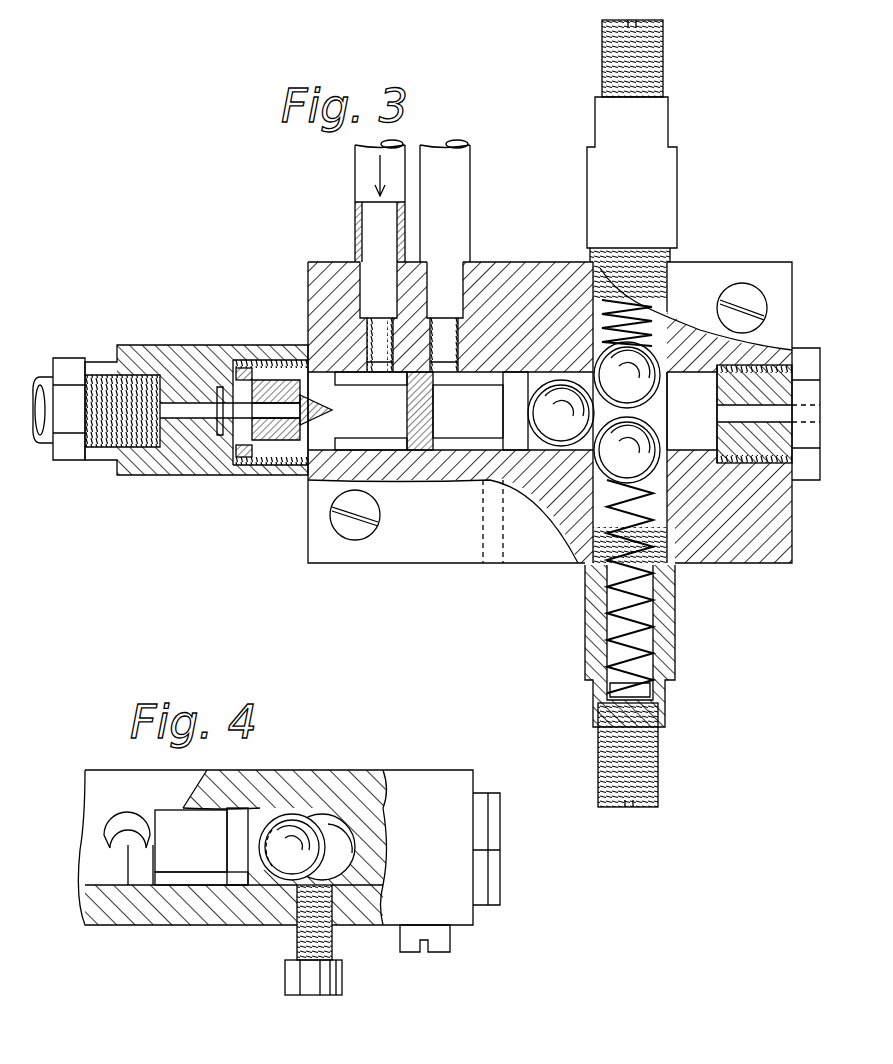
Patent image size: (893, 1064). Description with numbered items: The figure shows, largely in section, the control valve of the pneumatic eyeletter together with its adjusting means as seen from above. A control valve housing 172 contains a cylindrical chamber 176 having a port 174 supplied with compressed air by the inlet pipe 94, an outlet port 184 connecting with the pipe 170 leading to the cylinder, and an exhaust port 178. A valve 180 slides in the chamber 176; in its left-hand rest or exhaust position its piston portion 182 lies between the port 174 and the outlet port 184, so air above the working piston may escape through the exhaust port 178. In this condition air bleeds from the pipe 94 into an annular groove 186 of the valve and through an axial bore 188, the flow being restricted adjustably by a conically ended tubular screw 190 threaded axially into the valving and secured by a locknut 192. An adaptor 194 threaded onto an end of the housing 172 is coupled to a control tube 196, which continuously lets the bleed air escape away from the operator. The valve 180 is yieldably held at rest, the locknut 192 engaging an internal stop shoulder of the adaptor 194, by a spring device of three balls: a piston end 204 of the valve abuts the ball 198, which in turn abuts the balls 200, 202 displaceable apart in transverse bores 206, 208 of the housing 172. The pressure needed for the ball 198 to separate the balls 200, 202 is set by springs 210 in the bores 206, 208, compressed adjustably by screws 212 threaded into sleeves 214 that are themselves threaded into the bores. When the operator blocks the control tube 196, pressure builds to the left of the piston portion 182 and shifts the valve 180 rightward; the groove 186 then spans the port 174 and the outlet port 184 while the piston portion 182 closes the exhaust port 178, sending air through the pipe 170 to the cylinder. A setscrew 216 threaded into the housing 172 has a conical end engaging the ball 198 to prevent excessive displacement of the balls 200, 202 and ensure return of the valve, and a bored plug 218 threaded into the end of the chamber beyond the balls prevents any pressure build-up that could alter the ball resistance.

In FIG. 3, the inlet pipe 94 is at (356, 171).
In FIG. 3, the pipe 170 is at (468, 164).
In FIG. 4, the pipe 170 is at (126, 822).
In FIG. 3, the control valve housing 172 is at (308, 540).
In FIG. 4, the control valve housing 172 is at (178, 925).
In FIG. 3, the port 174 is at (378, 360).
In FIG. 3, the cylindrical chamber 176 is at (505, 383).
In FIG. 3, the exhaust port 178 is at (490, 480).
In FIG. 3, the valve 180 is at (432, 452).
In FIG. 4, the valve 180 is at (215, 861).
In FIG. 3, the piston portion 182 is at (440, 420).
In FIG. 4, the piston portion 182 is at (165, 845).
In FIG. 3, the outlet port 184 is at (443, 360).
In FIG. 3, the annular groove 186 is at (360, 440).
In FIG. 3, the axial bore 188 is at (300, 440).
In FIG. 3, the tubular screw 190 is at (262, 387).
In FIG. 3, the locknut 192 is at (244, 368).
In FIG. 3, the adaptor 194 is at (185, 470).
In FIG. 3, the control tube 196 is at (45, 445).
In FIG. 3, the ball 198 is at (560, 415).
In FIG. 4, the ball 198 is at (325, 838).
In FIG. 3, the ball 200 is at (630, 459).
In FIG. 4, the ball 200 is at (350, 868).
In FIG. 3, the ball 202 is at (630, 376).
In FIG. 3, the piston end 204 is at (515, 452).
In FIG. 4, the piston end 204 is at (255, 810).
In FIG. 3, the transverse bore 206 is at (655, 455).
In FIG. 3, the transverse bore 208 is at (655, 380).
In FIG. 3, the spring 210 is at (660, 320).
In FIG. 3, the screw 212 is at (665, 75).
In FIG. 3, the sleeve 214 is at (672, 190).
In FIG. 4, the setscrew 216 is at (343, 978).
In FIG. 3, the bored plug 218 is at (805, 482).
In FIG. 4, the bored plug 218 is at (482, 907).